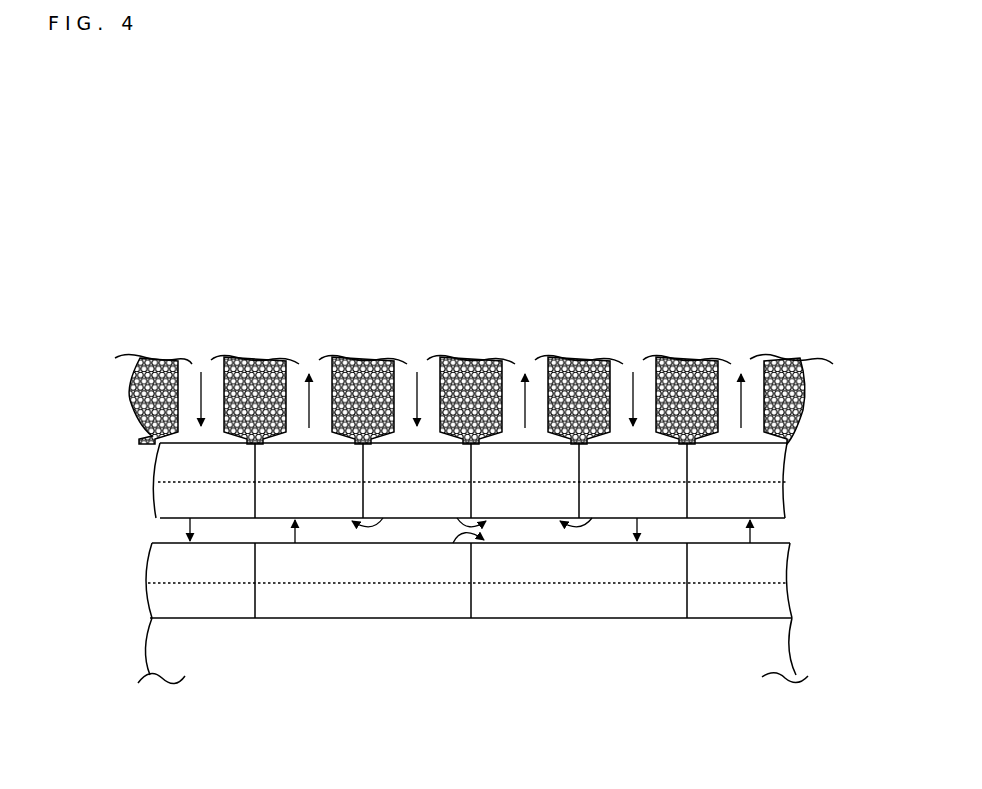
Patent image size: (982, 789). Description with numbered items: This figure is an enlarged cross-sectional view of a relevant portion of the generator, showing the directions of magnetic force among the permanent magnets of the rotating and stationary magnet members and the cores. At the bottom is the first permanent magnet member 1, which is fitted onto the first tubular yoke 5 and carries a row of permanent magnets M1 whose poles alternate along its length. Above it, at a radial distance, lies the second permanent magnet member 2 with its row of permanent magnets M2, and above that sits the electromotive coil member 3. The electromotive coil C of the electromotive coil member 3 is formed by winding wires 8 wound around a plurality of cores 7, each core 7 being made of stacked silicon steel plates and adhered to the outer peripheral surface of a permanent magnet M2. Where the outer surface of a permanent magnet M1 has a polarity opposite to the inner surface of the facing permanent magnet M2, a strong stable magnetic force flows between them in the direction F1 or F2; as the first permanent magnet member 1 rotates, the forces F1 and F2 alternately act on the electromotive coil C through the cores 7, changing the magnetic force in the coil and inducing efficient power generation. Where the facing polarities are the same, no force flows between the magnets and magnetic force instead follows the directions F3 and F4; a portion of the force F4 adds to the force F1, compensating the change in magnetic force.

The first permanent magnet member 1 is at (138, 619).
The second permanent magnet member 2 is at (148, 488).
The electromotive coil member 3 is at (127, 402).
The first tubular yoke 5 is at (735, 650).
The core 7 is at (303, 368).
The winding wire 8 is at (375, 360).
The electromotive coil C is at (148, 358).
The permanent magnet of first permanent magnet member M1 is at (158, 603).
The permanent magnet of second permanent magnet member M2 is at (158, 462).
The magnetic force direction F1 is at (520, 532).
The magnetic force direction F2 is at (427, 531).
The magnetic force direction F3 is at (470, 543).
The magnetic force direction F4 is at (462, 520).